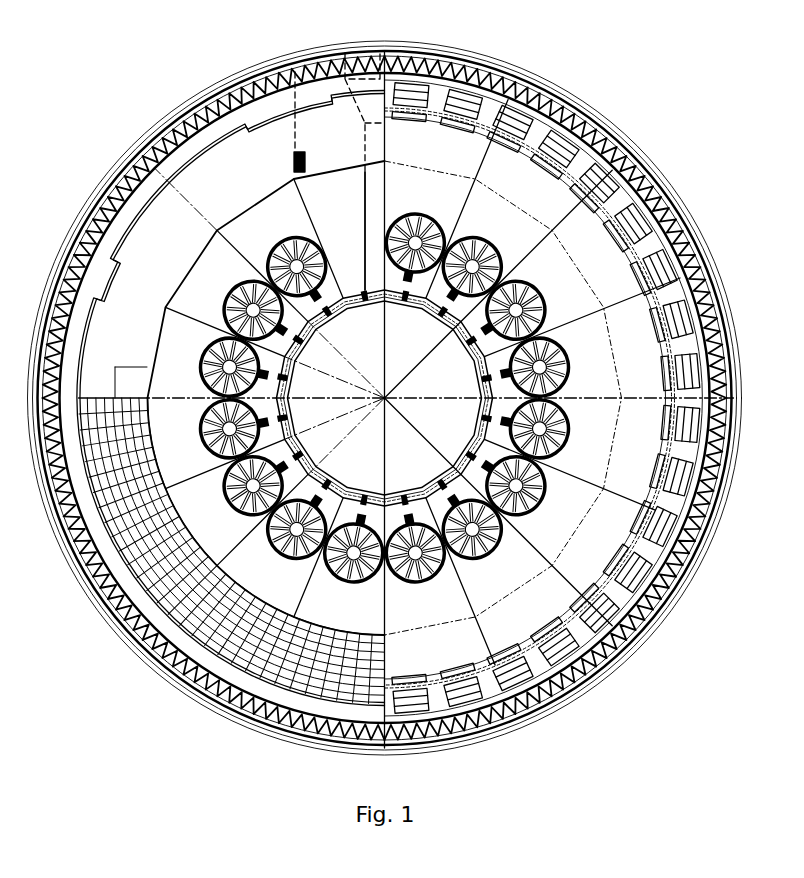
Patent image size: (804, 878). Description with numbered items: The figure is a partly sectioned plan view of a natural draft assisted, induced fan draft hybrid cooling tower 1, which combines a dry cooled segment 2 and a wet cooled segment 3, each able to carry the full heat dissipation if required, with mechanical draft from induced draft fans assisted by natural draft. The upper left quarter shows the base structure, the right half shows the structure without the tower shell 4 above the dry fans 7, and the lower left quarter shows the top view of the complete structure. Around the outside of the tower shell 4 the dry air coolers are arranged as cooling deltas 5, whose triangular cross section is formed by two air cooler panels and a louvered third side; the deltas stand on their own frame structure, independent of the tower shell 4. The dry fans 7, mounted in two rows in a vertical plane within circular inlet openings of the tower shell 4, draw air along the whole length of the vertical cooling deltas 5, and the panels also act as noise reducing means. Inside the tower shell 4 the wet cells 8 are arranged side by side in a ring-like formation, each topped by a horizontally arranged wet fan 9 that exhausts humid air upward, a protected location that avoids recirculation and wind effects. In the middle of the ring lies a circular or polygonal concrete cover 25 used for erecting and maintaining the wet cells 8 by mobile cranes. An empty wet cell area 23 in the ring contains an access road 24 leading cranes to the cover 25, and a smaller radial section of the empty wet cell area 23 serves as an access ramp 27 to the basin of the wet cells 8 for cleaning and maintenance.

The hybrid cooling tower 1 is at (172, 97).
The dry cooled segment 2 is at (603, 128).
The wet cooled segment 3 is at (166, 440).
The tower shell 4 is at (643, 260).
The cooling delta 5 is at (680, 278).
The dry fan 7 is at (693, 325).
The wet cell 8 is at (213, 533).
The wet fan 9 is at (308, 556).
The empty wet cell area 23 is at (332, 185).
The access road 24 is at (342, 210).
The concrete cover 25 is at (350, 353).
The access ramp 27 is at (373, 195).